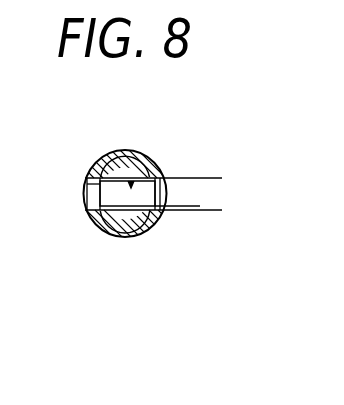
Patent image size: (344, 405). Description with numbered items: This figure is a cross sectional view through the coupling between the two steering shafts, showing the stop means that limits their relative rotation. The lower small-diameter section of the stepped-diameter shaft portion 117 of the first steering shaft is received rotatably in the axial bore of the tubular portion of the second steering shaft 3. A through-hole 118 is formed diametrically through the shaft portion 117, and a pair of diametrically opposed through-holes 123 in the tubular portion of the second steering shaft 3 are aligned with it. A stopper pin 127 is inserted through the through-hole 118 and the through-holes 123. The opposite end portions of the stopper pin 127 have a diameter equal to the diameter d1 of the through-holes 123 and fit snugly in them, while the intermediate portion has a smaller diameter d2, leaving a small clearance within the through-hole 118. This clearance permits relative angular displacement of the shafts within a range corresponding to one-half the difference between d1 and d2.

The second steering shaft 3 is at (98, 162).
The stepped-diameter shaft portion 117 is at (123, 172).
The through-hole 118 is at (135, 186).
The through-holes 123 is at (84, 187).
The stopper pin 127 is at (100, 197).
The diameter of the through-holes d1 is at (215, 243).
The diameter of the intermediate portion of the stopper pin d2 is at (194, 231).